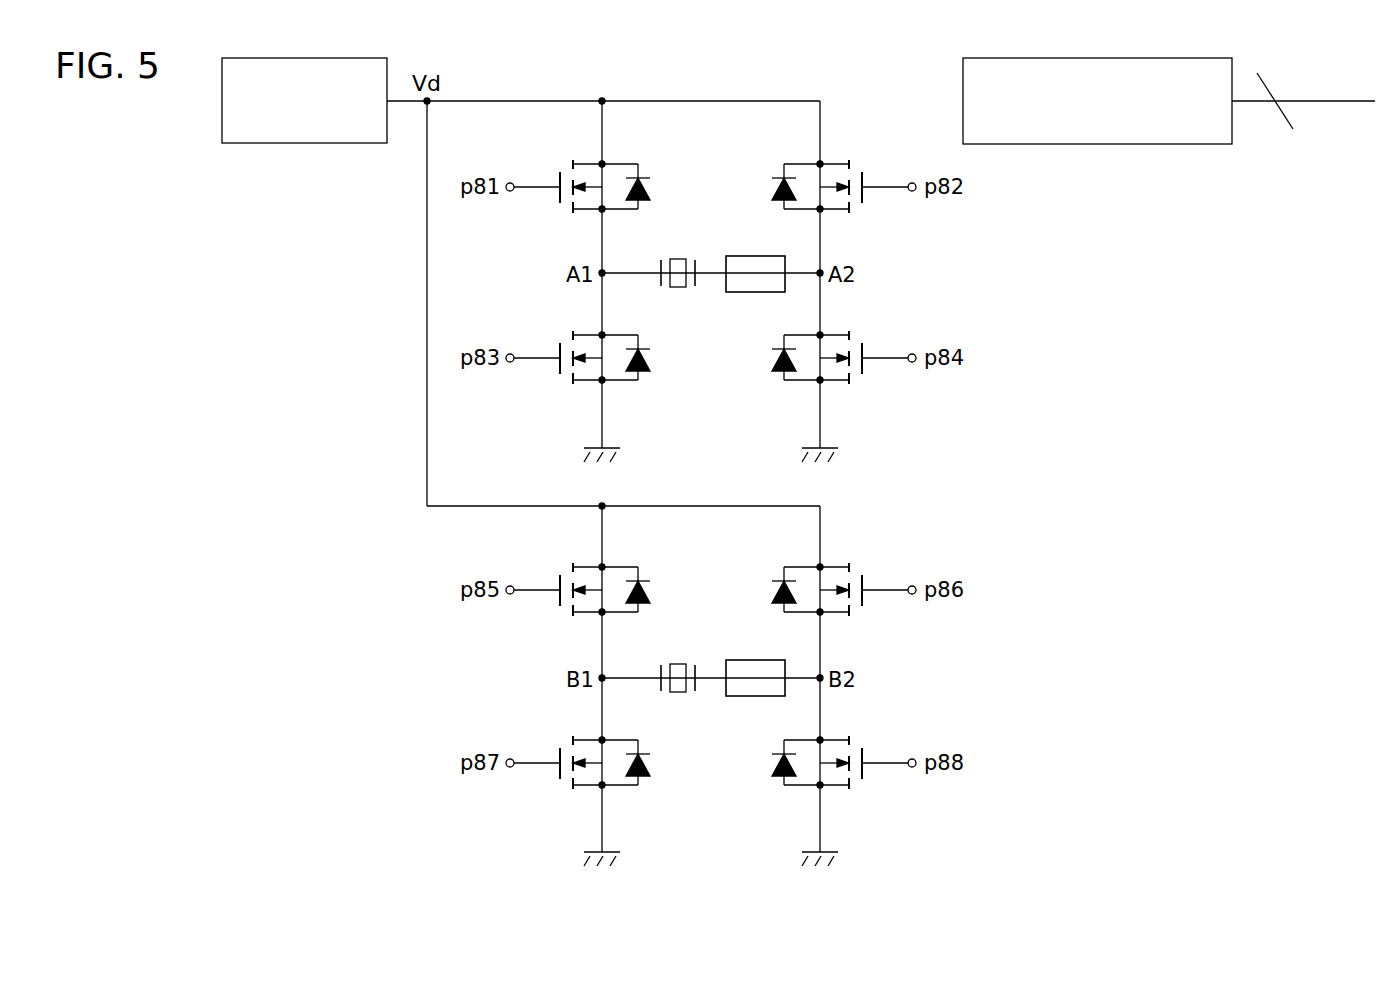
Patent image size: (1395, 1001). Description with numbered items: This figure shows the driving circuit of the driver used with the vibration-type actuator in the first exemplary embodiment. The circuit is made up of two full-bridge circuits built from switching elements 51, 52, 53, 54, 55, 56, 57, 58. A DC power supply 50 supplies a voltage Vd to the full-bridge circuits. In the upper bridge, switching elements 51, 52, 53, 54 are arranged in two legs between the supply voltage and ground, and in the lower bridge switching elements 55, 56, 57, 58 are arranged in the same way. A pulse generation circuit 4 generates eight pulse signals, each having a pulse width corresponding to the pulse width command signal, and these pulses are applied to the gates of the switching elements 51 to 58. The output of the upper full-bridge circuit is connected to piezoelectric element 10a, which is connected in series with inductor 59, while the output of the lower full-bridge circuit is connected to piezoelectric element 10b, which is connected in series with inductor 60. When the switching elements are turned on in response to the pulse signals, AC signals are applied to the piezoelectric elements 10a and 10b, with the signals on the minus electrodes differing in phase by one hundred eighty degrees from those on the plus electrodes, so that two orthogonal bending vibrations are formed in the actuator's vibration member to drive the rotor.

The pulse generation circuit 4 is at (1087, 145).
The DC power supply 50 is at (307, 143).
The switching element 51 is at (566, 170).
The switching element 52 is at (859, 170).
The switching element 53 is at (566, 343).
The switching element 54 is at (859, 343).
The switching element 55 is at (566, 575).
The switching element 56 is at (859, 575).
The switching element 57 is at (566, 749).
The switching element 58 is at (859, 749).
The inductor 59 is at (755, 293).
The inductor 60 is at (757, 698).
The piezoelectric element 10a is at (680, 259).
The piezoelectric element 10b is at (680, 664).